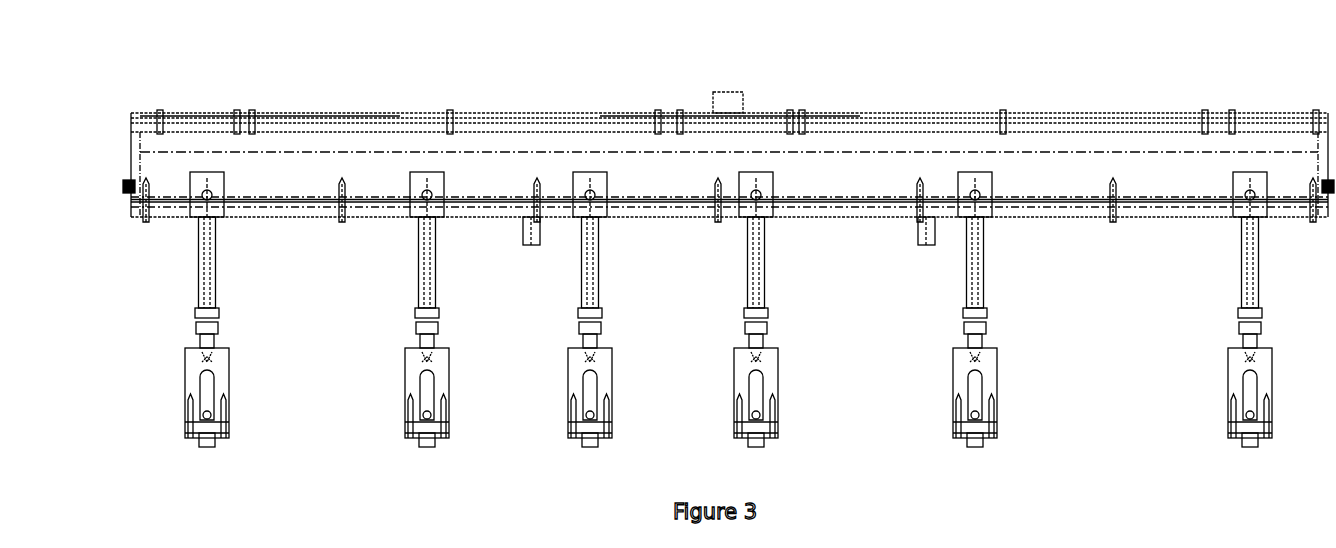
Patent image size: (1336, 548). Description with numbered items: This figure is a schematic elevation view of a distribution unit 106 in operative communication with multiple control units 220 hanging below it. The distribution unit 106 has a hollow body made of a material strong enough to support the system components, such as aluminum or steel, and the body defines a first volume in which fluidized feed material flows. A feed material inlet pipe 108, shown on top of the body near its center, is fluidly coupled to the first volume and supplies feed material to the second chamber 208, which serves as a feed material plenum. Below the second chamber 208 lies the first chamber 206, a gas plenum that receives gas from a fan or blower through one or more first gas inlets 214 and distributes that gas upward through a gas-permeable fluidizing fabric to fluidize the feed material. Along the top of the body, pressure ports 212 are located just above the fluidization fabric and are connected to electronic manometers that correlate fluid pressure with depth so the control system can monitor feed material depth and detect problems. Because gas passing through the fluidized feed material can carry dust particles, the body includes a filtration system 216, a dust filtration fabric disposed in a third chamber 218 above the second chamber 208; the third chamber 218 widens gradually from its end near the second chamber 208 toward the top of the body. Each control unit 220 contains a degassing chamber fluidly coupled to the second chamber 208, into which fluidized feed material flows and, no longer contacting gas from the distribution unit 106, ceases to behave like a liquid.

The distribution unit 106 is at (973, 85).
The feed material inlet pipe 108 is at (745, 94).
The first chamber 206 is at (128, 219).
The second chamber 208 is at (308, 175).
The pressure ports 212 is at (183, 113).
The first gas inlet 214 is at (531, 245).
The filtration system 216 is at (413, 113).
The third chamber 218 is at (148, 147).
The control unit 220 is at (1202, 380).